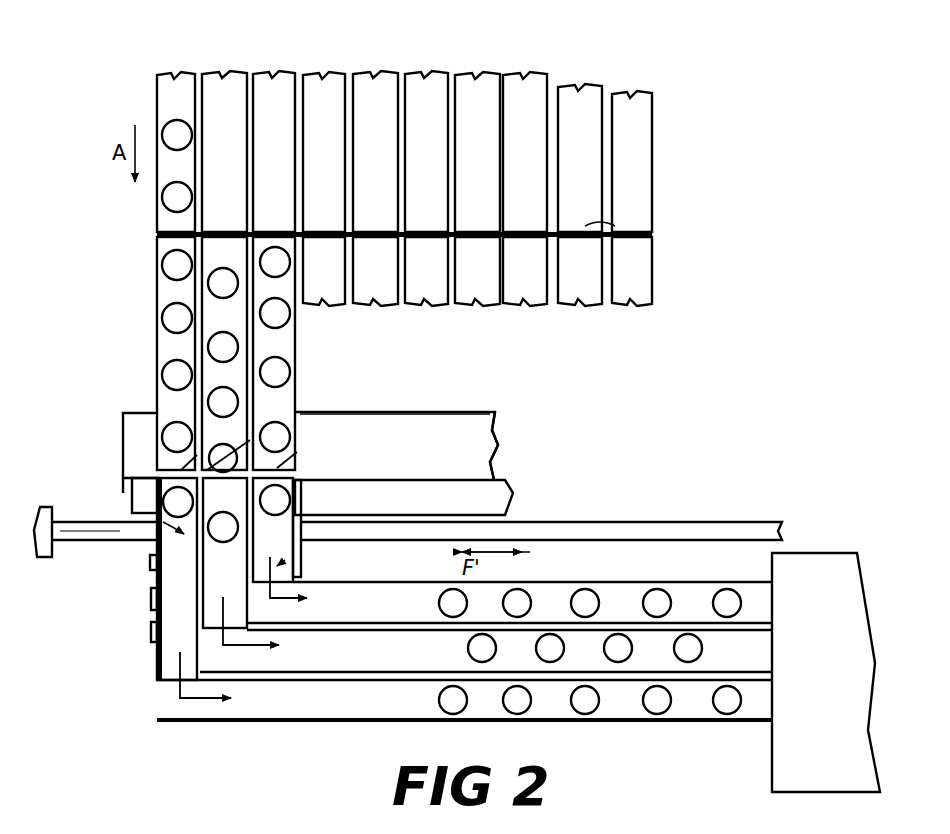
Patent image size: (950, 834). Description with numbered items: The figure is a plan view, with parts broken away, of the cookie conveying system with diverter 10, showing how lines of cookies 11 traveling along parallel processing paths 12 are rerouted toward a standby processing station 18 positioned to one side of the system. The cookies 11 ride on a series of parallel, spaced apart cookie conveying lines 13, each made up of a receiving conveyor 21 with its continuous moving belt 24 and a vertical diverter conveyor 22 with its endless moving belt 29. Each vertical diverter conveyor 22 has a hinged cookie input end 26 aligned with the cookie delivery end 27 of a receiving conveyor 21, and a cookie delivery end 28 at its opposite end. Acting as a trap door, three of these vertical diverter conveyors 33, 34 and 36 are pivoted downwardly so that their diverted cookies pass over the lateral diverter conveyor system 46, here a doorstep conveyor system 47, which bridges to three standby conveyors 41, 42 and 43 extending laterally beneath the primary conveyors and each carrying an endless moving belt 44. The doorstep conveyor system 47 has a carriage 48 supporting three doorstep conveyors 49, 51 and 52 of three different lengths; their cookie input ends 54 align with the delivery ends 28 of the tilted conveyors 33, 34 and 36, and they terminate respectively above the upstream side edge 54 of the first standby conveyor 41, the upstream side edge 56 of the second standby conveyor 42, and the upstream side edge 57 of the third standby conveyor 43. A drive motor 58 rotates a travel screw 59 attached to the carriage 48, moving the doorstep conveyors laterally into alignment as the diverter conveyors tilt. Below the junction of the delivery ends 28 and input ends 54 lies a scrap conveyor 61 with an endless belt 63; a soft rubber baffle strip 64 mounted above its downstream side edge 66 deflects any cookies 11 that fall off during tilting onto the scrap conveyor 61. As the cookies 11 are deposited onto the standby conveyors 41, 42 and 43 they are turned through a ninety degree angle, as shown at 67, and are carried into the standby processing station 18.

The diverter 10 is at (84, 109).
The cookies 11 is at (172, 140).
The processing paths 12 is at (277, 109).
The cookie conveying lines 13 is at (181, 109).
The standby processing station 18 is at (830, 684).
The receiving conveyors 21 is at (584, 146).
The vertical diverter conveyors 22 is at (527, 300).
The moving belt 24 is at (520, 135).
The hinged cookie input end 26 is at (578, 240).
The cookie delivery end 27 is at (580, 222).
The cookie delivery end 28 is at (203, 456).
The endless moving belt 29 is at (257, 360).
The vertical diverter conveyor 33 is at (270, 285).
The vertical diverter conveyor 34 is at (217, 316).
The vertical diverter conveyor 36 is at (172, 349).
The standby conveyor 41 is at (539, 594).
The standby conveyor 42 is at (594, 644).
The standby conveyor 43 is at (547, 703).
The endless moving belt 44 is at (388, 650).
The lateral diverter conveyor system 46 is at (114, 636).
The doorstep conveyor system 47 is at (148, 593).
The carriage 48 is at (150, 562).
The doorstep conveyor 49 is at (298, 562).
The doorstep conveyor 51 is at (222, 492).
The doorstep conveyor 52 is at (132, 522).
The cookie input ends 54 is at (404, 583).
The upstream side edge 56 is at (345, 632).
The upstream side edge 57 is at (288, 682).
The drive motor 58 is at (45, 557).
The travel screw 59 is at (88, 540).
The scrap conveyor 61 is at (123, 433).
The endless moving belt 63 is at (433, 412).
The baffle strip 64 is at (513, 493).
The downstream side edge 66 is at (497, 477).
The cookie turning 67 is at (155, 680).